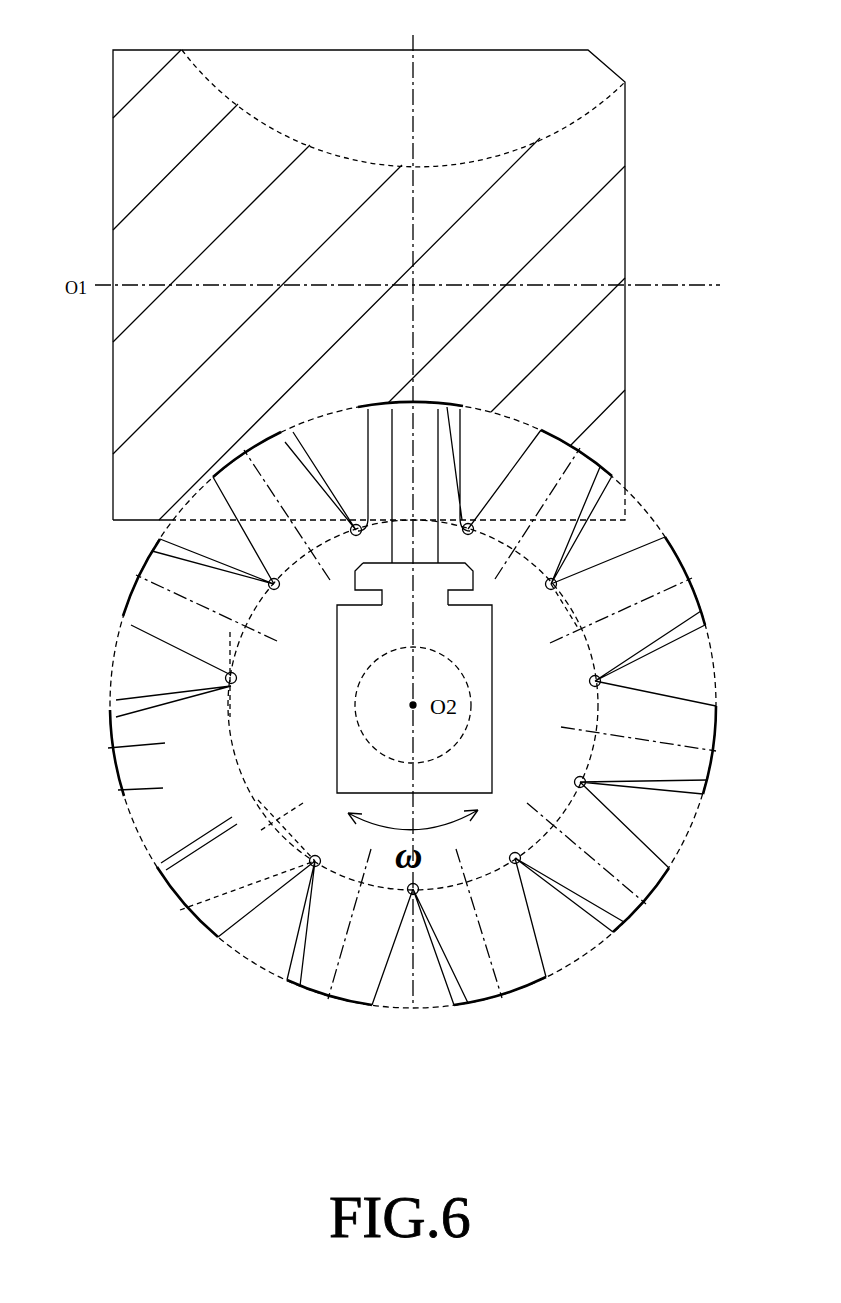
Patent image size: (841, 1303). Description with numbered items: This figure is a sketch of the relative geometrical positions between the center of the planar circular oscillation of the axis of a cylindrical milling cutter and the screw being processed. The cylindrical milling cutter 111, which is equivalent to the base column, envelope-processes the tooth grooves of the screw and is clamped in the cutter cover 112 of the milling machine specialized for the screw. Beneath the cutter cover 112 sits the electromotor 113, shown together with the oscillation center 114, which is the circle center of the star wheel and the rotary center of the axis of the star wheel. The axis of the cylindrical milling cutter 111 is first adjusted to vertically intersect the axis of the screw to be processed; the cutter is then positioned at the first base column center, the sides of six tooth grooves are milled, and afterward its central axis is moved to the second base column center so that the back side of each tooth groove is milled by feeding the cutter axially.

The cylindrical milling cutter 111 is at (405, 462).
The cutter cover 112 is at (365, 577).
The electromotor 113 is at (414, 699).
The oscillation center 114 is at (410, 710).